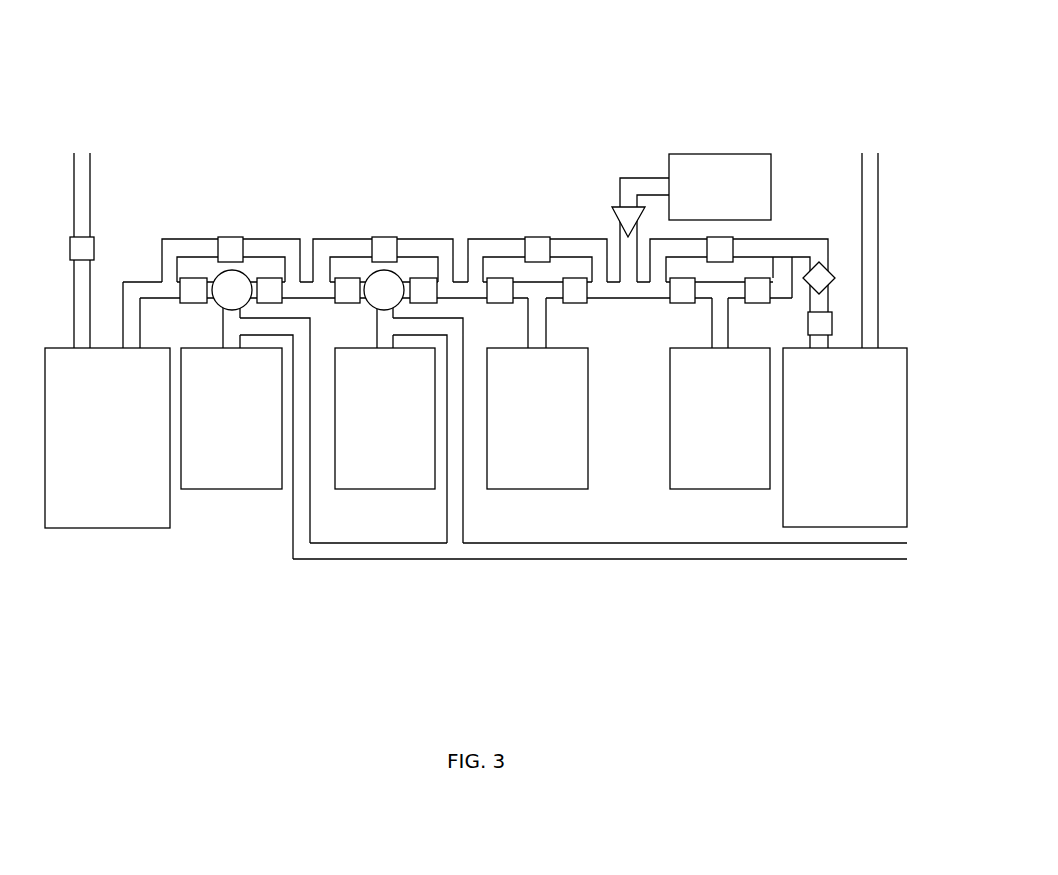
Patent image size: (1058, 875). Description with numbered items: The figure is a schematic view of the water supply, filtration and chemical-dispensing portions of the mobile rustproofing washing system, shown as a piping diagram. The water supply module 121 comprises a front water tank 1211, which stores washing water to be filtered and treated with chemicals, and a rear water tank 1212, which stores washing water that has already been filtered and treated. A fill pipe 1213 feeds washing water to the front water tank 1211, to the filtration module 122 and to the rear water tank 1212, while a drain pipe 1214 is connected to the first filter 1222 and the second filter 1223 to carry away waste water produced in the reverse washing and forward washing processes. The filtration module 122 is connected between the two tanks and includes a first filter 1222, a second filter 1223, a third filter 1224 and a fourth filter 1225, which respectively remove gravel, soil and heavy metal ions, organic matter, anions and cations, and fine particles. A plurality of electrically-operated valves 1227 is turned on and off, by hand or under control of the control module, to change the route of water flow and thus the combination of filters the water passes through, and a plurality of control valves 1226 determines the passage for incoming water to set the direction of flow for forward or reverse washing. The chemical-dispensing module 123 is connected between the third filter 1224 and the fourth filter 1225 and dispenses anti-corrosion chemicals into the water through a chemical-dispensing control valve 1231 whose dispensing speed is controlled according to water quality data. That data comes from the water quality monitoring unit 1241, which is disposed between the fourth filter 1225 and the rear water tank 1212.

The water supply module 121 is at (92, 597).
The filtration module 122 is at (449, 112).
The chemical-dispensing module 123 is at (771, 183).
The front water tank 1211 is at (107, 528).
The rear water tank 1212 is at (845, 527).
The fill pipe 1213 is at (93, 170).
The drain pipe 1214 is at (315, 560).
The first filter 1222 is at (233, 490).
The second filter 1223 is at (405, 490).
The third filter 1224 is at (543, 490).
The fourth filter 1225 is at (720, 490).
The control valve 1226 is at (216, 310).
The electrically-operated valve 1227 is at (94, 248).
The chemical-dispensing control valve 1231 is at (622, 207).
The water quality monitoring unit 1241 is at (836, 278).